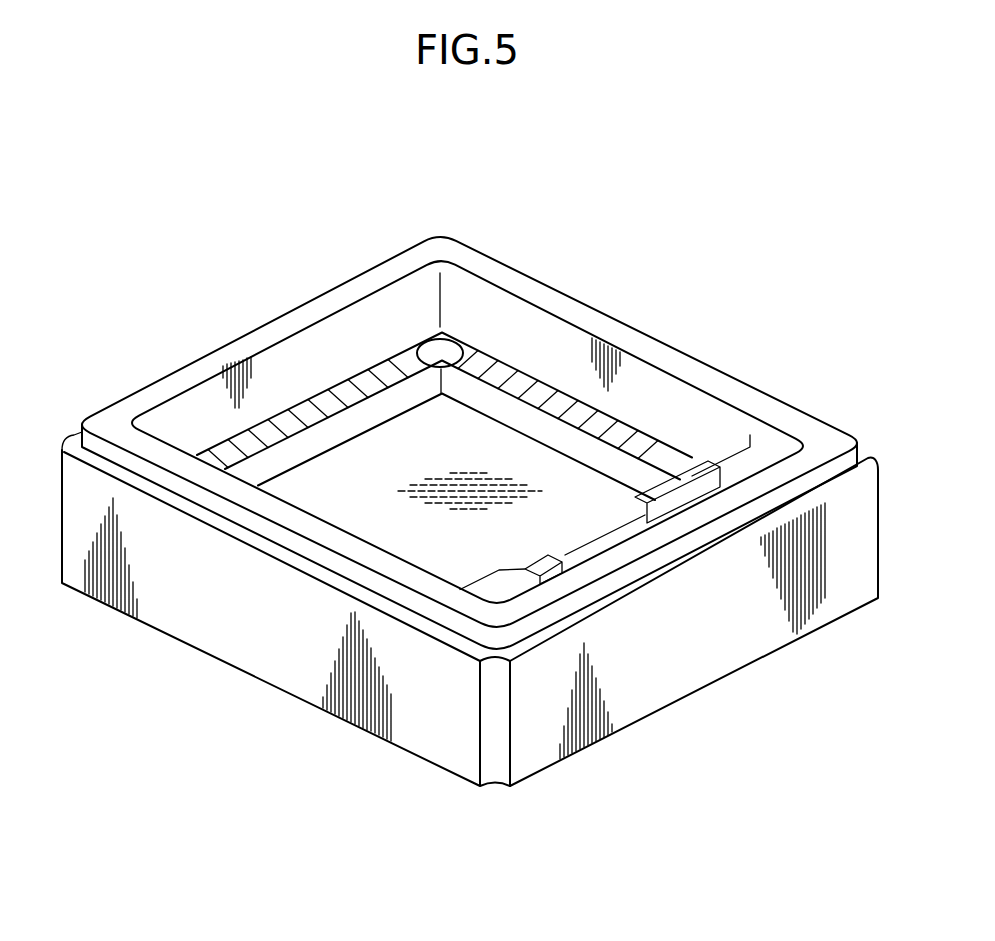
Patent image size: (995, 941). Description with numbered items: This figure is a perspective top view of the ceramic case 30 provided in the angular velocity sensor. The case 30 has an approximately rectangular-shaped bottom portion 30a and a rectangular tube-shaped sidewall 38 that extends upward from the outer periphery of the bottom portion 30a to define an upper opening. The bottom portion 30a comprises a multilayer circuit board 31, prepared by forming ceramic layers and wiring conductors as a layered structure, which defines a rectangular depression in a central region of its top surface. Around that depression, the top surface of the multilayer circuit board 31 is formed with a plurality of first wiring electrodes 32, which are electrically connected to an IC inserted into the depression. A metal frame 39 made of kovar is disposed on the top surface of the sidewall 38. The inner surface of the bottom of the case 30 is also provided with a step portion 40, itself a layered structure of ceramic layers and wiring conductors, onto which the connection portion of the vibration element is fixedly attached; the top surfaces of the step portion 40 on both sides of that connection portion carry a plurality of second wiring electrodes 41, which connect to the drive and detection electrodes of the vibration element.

The case 30 is at (470, 622).
The bottom portion 30a is at (397, 472).
The multilayer circuit board 31 is at (470, 355).
The first wiring electrodes 32 is at (540, 386).
The sidewall 38 is at (657, 690).
The metal frame 39 is at (688, 367).
The step portion 40 is at (638, 528).
The second wiring electrodes 41 is at (684, 492).